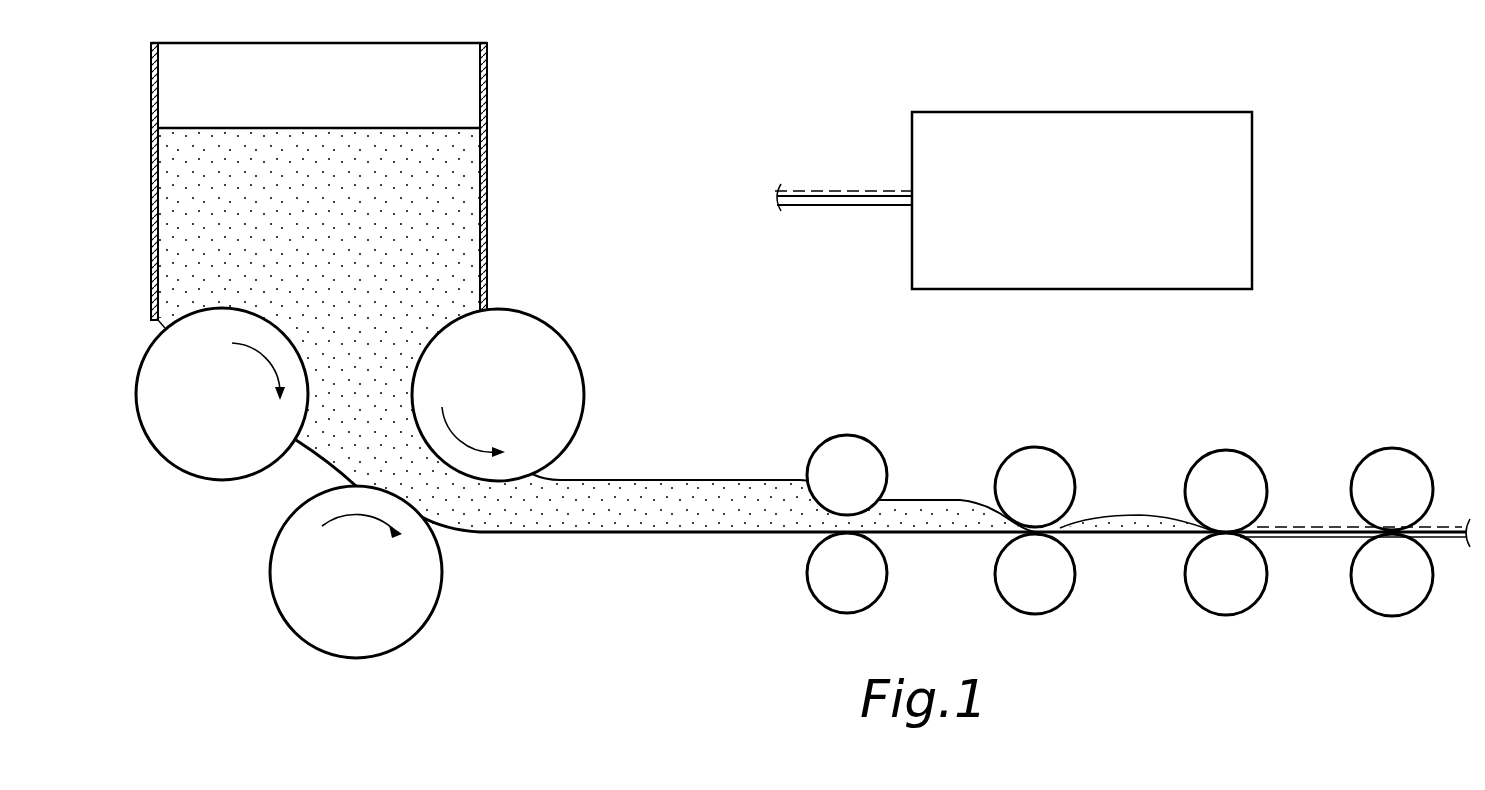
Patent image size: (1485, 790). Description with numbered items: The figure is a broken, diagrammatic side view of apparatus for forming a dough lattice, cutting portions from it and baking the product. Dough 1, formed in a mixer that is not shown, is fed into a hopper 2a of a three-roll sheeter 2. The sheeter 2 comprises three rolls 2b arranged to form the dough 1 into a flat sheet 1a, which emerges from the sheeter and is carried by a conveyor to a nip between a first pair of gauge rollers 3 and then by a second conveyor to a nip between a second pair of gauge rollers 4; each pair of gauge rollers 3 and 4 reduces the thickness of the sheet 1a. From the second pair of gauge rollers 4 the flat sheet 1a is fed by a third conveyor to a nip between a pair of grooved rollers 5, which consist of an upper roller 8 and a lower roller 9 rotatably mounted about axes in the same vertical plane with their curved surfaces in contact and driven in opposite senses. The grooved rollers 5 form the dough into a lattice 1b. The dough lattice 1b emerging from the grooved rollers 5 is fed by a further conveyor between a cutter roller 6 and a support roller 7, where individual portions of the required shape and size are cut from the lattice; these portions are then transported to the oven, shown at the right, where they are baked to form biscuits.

The dough 1 is at (465, 203).
The flat sheet 1a is at (672, 497).
The dough lattice 1b is at (808, 192).
The three-roll sheeter 2 is at (362, 185).
The hopper 2a is at (485, 92).
The rolls 2b is at (184, 455).
The first pair of gauge rollers 3 is at (873, 463).
The second pair of gauge rollers 4 is at (1057, 468).
The pair of grooved rollers 5 is at (1206, 492).
The cutter roller 6 is at (1418, 472).
The support roller 7 is at (1418, 577).
The upper roller 8 is at (1205, 472).
The lower roller 9 is at (1193, 570).